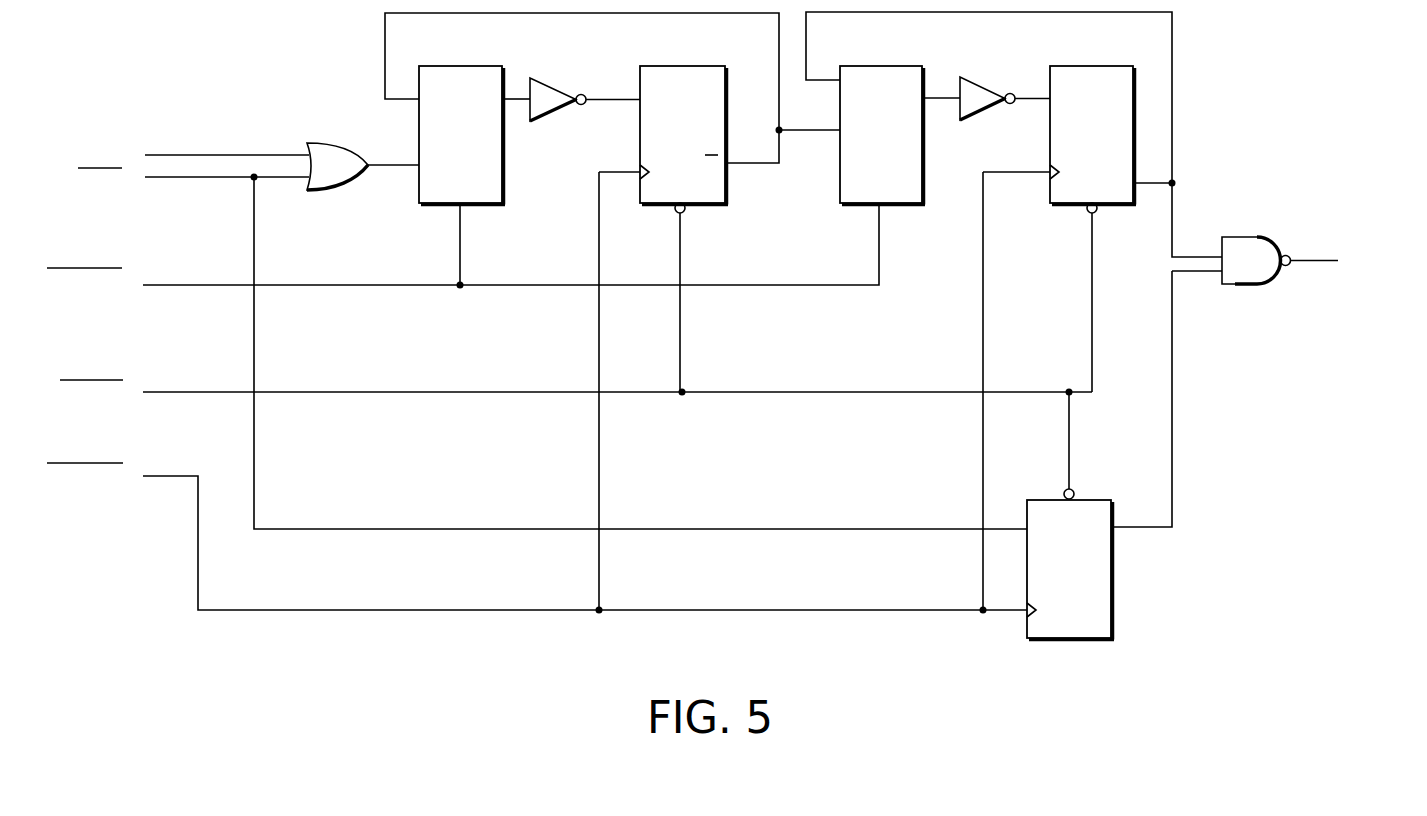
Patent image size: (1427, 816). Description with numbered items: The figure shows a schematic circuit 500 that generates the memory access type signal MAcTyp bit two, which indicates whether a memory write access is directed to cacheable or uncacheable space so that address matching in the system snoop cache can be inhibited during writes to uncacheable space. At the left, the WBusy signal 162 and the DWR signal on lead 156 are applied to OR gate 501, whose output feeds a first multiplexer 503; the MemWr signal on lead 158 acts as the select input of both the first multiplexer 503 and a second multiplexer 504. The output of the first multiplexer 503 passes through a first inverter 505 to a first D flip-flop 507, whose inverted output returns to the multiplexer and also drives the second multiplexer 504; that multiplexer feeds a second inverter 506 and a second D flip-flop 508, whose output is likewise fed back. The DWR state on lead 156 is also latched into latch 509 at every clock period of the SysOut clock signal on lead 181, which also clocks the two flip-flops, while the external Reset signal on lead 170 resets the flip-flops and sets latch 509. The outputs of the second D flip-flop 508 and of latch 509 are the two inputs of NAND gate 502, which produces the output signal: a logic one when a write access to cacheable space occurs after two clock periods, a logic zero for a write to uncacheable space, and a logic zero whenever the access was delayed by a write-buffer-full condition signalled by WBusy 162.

The schematic circuit 500 is at (1260, 120).
The WBusy signal 162 is at (222, 155).
The lead carrying the DWR signal 156 is at (254, 247).
The lead carrying the MemWr signal 158 is at (355, 285).
The lead carrying the Reset signal 170 is at (765, 392).
The lead carrying the SysOut clock signal 181 is at (765, 610).
The OR gate 501 is at (318, 143).
The NAND gate 502 is at (1252, 238).
The first multiplexer 503 is at (505, 187).
The second multiplexer 504 is at (925, 175).
The first inverter 505 is at (550, 80).
The second inverter 506 is at (988, 80).
The first D flip-flop 507 is at (727, 183).
The second D flip-flop 508 is at (1090, 66).
The latch 509 is at (1113, 580).